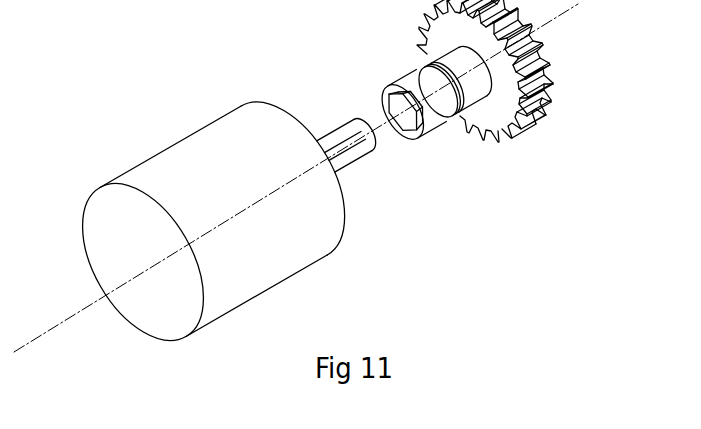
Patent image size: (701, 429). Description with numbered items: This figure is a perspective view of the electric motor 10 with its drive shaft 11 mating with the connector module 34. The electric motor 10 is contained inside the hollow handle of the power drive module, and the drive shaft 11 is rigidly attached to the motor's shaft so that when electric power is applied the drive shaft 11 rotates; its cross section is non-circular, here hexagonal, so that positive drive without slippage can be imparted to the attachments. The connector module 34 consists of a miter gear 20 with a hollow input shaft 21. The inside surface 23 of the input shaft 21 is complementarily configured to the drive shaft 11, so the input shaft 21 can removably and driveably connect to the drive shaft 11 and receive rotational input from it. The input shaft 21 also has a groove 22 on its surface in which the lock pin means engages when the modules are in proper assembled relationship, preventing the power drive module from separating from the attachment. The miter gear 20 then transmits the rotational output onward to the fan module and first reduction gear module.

The electric motor 10 is at (300, 268).
The drive shaft 11 is at (347, 125).
The miter gear 20 is at (525, 113).
The hollow input shaft 21 is at (430, 65).
The groove 22 is at (448, 112).
The inside surface 23 is at (383, 99).
The connector module 34 is at (437, 113).